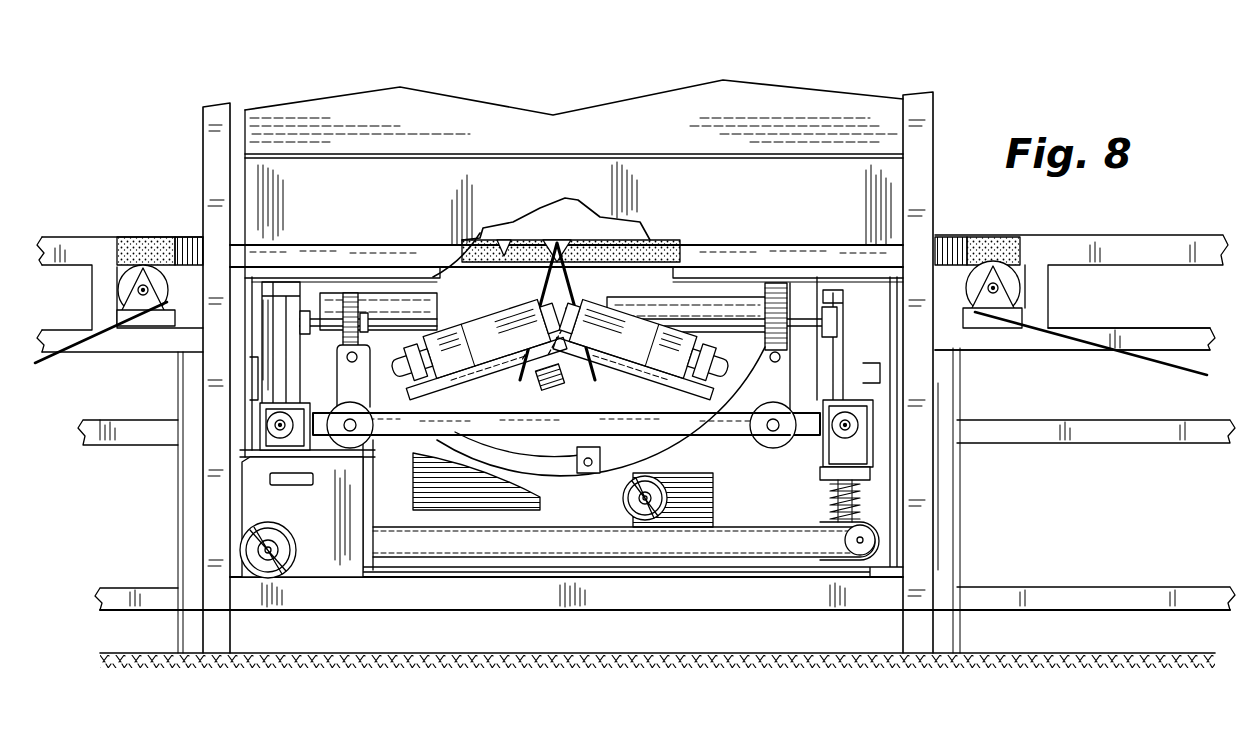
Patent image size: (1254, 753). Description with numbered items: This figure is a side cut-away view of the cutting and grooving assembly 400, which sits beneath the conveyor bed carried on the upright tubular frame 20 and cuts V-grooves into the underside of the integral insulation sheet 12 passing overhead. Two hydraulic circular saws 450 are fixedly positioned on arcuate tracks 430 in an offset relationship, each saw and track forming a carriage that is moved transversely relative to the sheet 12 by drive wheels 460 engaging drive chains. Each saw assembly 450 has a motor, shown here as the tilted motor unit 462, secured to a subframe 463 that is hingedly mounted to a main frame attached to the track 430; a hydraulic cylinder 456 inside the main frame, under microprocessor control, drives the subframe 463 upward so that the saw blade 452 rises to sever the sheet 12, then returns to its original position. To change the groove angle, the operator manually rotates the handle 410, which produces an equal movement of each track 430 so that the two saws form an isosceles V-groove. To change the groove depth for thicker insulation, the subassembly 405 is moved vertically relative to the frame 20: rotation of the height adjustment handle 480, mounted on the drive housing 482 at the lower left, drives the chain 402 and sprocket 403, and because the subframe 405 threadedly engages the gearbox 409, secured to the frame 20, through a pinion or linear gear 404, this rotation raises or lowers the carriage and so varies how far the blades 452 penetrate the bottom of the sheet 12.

The cutting and grooving assembly 400 is at (858, 92).
The integral sheet 12 is at (600, 232).
The frame 20 is at (1183, 333).
The circular saw 450 is at (480, 233).
The saw blade 452 is at (573, 240).
The hydraulic cylinder 456 is at (540, 392).
The drive wheel 460 is at (775, 310).
The actuating cylinder 462 is at (417, 370).
The subframe 463 is at (440, 405).
The arcuate track 430 is at (557, 470).
The subframe 405 is at (752, 437).
The handle 410 is at (665, 530).
The chain 402 is at (805, 560).
The sprocket 403 is at (878, 542).
The pinion or linear gear 404 is at (857, 503).
The gearbox 409 is at (837, 545).
The adjustment handle 480 is at (288, 580).
The drive housing 482 is at (337, 567).